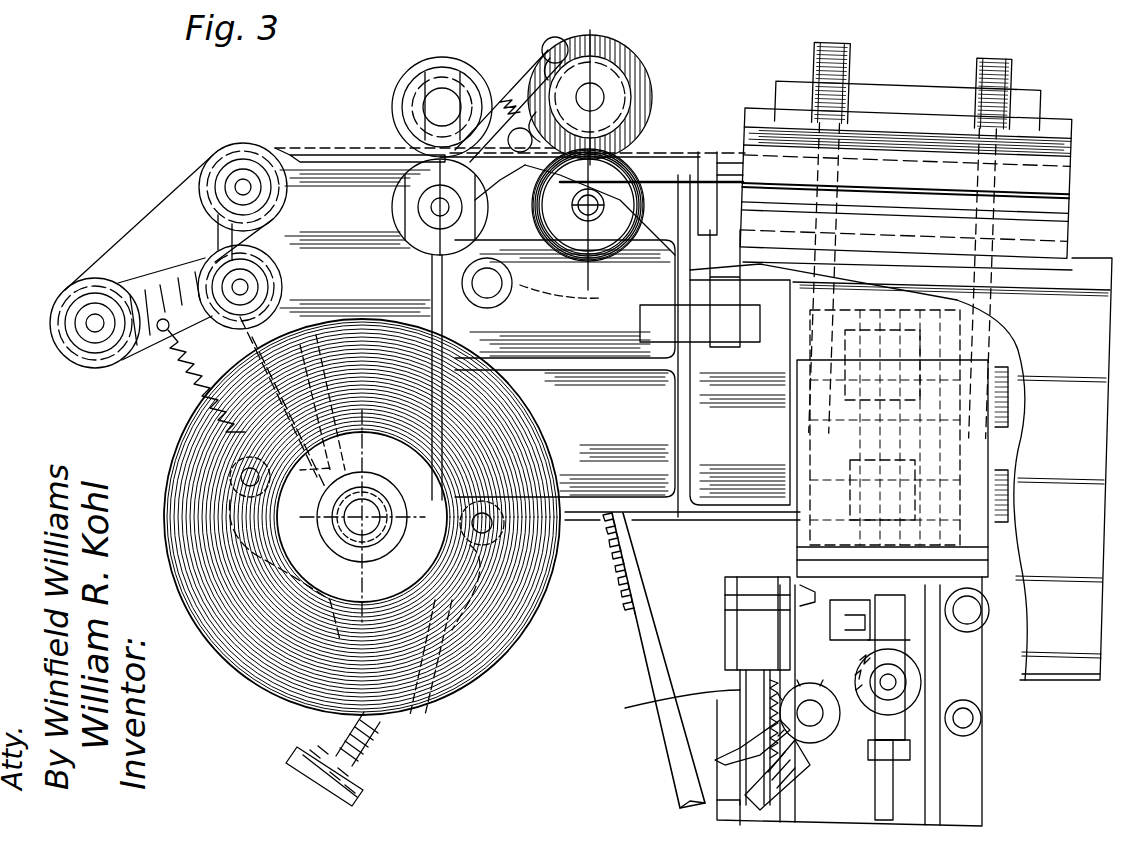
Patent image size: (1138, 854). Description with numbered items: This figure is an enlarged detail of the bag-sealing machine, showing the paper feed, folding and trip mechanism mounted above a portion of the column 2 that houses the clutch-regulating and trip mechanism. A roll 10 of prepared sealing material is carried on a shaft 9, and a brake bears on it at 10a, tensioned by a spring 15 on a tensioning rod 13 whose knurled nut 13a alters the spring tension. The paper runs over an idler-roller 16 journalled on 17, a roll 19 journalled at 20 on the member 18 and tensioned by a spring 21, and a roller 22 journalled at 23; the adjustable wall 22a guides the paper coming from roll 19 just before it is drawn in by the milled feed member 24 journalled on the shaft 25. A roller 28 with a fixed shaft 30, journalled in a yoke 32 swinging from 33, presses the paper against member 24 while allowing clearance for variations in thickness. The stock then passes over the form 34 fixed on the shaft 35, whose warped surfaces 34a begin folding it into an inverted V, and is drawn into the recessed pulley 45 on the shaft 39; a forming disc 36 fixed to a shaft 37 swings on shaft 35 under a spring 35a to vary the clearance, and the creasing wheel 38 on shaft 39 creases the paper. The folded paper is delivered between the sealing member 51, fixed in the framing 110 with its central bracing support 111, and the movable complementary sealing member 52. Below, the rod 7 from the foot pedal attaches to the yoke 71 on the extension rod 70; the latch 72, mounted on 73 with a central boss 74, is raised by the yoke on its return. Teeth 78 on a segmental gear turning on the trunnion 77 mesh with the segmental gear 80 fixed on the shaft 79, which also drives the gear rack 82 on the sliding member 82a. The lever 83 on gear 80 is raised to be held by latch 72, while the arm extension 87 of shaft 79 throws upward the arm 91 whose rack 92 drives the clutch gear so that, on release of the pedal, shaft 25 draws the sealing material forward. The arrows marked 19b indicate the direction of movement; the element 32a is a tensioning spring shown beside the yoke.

The column 2 is at (965, 775).
The rod 7 is at (875, 794).
The shaft 9 is at (352, 522).
The roll of prepared sealing material 10 is at (232, 640).
The brake bearing 10a is at (408, 548).
The tensioning rod 13 is at (380, 735).
The knurled nut 13a is at (360, 800).
The spring 15 is at (590, 25).
The idler-roller 16 is at (268, 268).
The idler-roller journal 17 is at (250, 287).
The roll support 18 is at (152, 285).
The roll 19 is at (58, 323).
The direction indicator 19b is at (352, 447).
The roll journal 20 is at (90, 320).
The spring 21 is at (190, 372).
The roller 22 is at (243, 143).
The adjustable wall 22a is at (330, 150).
The roller journal 23 is at (240, 186).
The feed member 24 is at (392, 205).
The shaft 25 is at (438, 210).
The roller 28 is at (405, 72).
The fixed shaft 30 is at (440, 107).
The yoke 32 is at (493, 57).
The spring 32a is at (508, 98).
The yoke pivot 33 is at (527, 101).
The form 34 is at (530, 170).
The warped surfaces 34a is at (705, 165).
The shaft 35 is at (483, 290).
The spring 35a is at (640, 288).
The forming disc 36 is at (612, 240).
The shaft 37 is at (600, 212).
The creasing wheel 38 is at (655, 80).
The shaft 39 is at (600, 96).
The recessed pulley 45 is at (648, 125).
The sealing member 51 is at (1062, 160).
The complementary sealing member 52 is at (1062, 226).
The extension rod 70 is at (885, 605).
The yoke 71 is at (905, 635).
The latch 72 is at (798, 588).
The latch pivot 73 is at (982, 606).
The boss 74 is at (850, 615).
The trunnion 77 is at (983, 718).
The teeth 78 is at (856, 665).
The shaft 79 is at (797, 713).
The segmental gear 80 is at (858, 688).
The gear rack 82 is at (722, 684).
The sliding member 82a is at (670, 712).
The lever 83 is at (725, 758).
The arm extension 87 is at (700, 790).
The arm 91 is at (652, 655).
The rack 92 is at (610, 598).
The framing 110 is at (972, 52).
The central bracing support 111 is at (930, 100).